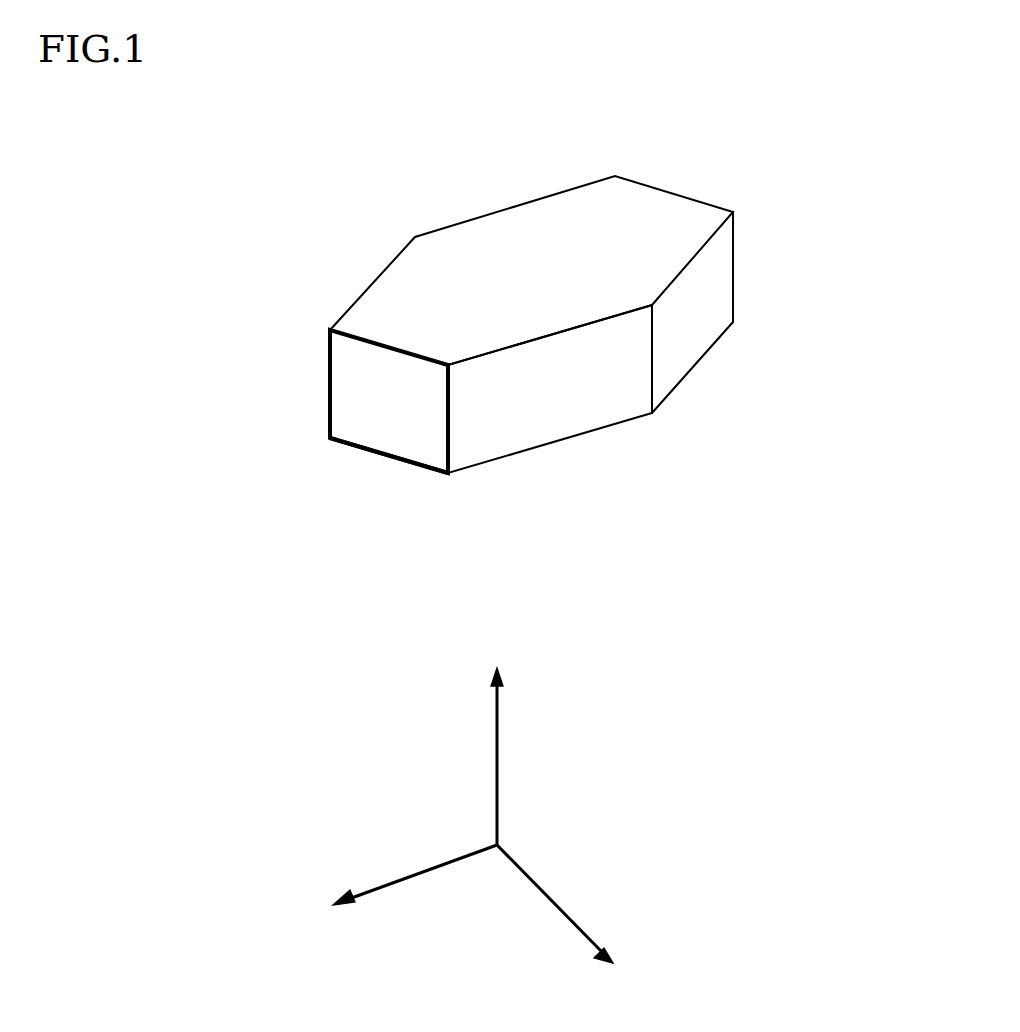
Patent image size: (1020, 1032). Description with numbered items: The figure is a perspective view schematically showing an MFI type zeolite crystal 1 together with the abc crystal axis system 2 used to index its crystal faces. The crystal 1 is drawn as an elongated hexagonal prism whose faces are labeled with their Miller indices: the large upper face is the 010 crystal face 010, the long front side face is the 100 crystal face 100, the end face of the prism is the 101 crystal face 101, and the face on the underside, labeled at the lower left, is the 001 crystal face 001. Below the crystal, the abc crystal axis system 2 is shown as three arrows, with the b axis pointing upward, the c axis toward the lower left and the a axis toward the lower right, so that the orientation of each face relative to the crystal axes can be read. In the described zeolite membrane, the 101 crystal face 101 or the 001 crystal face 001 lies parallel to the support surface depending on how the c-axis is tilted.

The MFI type zeolite crystal 1 is at (569, 329).
The abc crystal axis system 2 is at (628, 761).
The 010 crystal face 010 is at (531, 270).
The 100 crystal face 100 is at (550, 389).
The 101 crystal face 101 is at (389, 401).
The 001 crystal face 001 is at (332, 475).